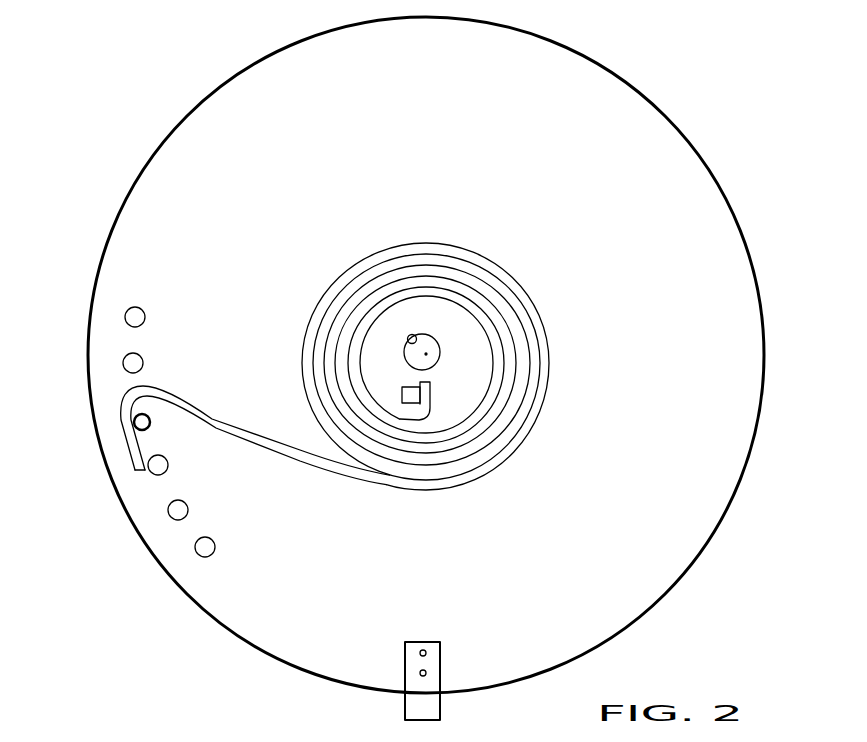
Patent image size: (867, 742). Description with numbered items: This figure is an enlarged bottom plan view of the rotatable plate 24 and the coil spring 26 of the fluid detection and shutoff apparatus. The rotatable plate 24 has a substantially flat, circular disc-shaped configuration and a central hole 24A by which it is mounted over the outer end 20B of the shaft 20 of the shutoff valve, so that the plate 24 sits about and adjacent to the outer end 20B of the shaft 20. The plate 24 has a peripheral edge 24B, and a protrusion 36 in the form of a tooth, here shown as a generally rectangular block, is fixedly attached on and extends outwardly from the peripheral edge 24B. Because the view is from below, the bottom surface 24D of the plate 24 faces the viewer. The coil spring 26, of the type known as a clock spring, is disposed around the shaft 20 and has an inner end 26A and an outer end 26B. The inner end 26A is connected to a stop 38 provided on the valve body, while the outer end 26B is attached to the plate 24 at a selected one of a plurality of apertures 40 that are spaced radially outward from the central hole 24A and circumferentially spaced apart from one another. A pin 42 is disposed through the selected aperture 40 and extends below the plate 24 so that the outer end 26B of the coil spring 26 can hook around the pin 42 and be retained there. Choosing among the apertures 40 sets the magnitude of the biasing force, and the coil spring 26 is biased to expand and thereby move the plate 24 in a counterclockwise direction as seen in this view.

The shaft 20 is at (438, 349).
The outer end of the shaft 20B is at (430, 335).
The rotatable plate 24 is at (762, 405).
The central hole 24A is at (412, 333).
The peripheral edge 24B is at (660, 602).
The bottom surface 24D is at (693, 312).
The coil spring 26 is at (548, 375).
The inner end of the coil spring 26A is at (432, 391).
The outer end of the coil spring 26B is at (133, 425).
The protrusion 36 is at (442, 705).
The stop 38 is at (403, 400).
The apertures 40 is at (144, 321).
The pin 42 is at (152, 420).